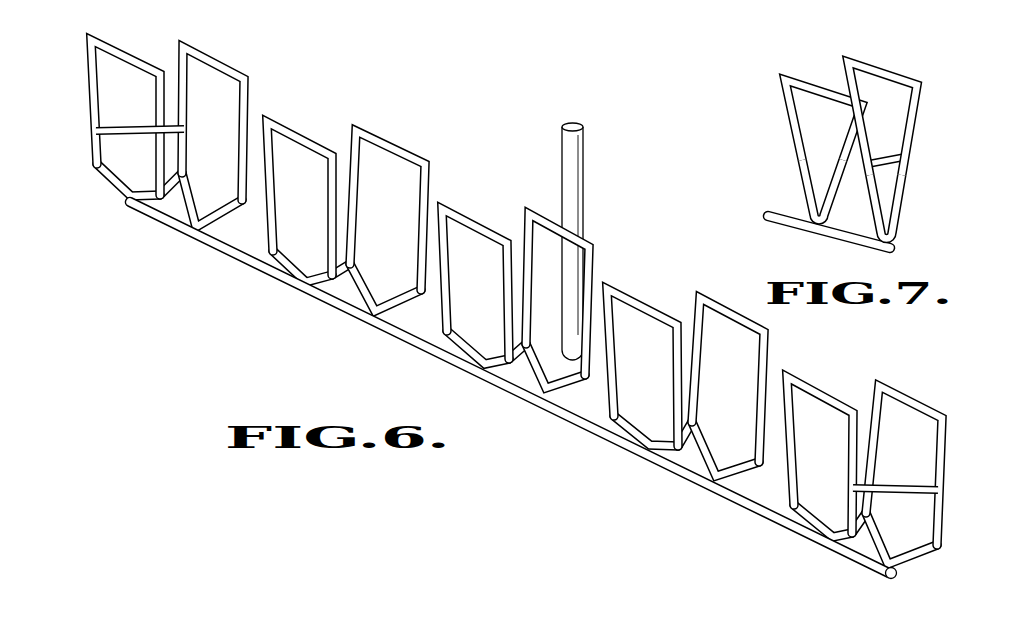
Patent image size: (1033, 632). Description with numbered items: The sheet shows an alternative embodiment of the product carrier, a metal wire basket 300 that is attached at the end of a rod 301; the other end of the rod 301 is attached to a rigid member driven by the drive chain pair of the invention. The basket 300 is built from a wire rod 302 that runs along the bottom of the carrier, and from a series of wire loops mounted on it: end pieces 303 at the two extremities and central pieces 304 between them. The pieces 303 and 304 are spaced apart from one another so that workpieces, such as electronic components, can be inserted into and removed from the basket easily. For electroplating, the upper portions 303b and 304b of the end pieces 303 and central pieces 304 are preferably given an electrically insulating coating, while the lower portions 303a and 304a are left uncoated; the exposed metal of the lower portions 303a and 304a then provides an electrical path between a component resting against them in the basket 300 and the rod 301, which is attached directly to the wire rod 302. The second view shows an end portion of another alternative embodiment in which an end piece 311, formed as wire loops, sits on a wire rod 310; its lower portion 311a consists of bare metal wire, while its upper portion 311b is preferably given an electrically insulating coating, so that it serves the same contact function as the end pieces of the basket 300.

In FIG. 6, the basket 300 is at (438, 120).
In FIG. 6, the rod 301 is at (565, 129).
In FIG. 6, the wire rod 302 is at (412, 352).
In FIG. 6, the end piece 303 is at (487, 313).
In FIG. 6, the lower portion 303a is at (110, 180).
In FIG. 6, the upper portion 303b is at (95, 98).
In FIG. 6, the central piece 304 is at (470, 327).
In FIG. 6, the lower portion 304a is at (296, 272).
In FIG. 6, the upper portion 304b is at (270, 257).
In FIG. 7, the rail 310 is at (802, 229).
In FIG. 7, the wire loop member 311 is at (822, 126).
In FIG. 7, the lower portion 311a is at (802, 185).
In FIG. 7, the upper portion 311b is at (788, 118).